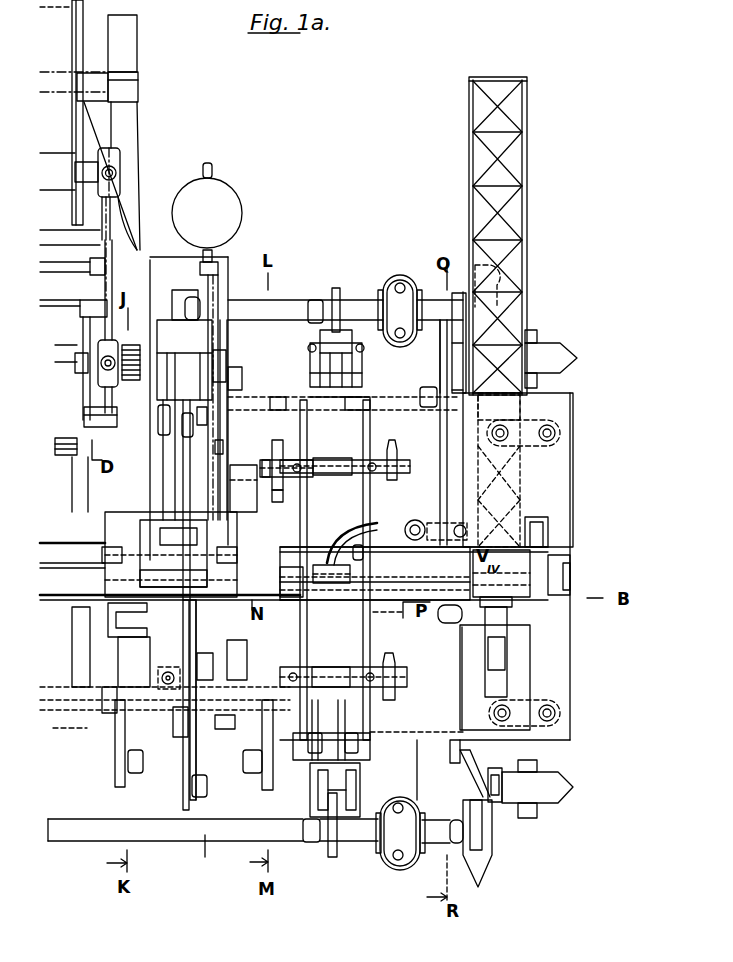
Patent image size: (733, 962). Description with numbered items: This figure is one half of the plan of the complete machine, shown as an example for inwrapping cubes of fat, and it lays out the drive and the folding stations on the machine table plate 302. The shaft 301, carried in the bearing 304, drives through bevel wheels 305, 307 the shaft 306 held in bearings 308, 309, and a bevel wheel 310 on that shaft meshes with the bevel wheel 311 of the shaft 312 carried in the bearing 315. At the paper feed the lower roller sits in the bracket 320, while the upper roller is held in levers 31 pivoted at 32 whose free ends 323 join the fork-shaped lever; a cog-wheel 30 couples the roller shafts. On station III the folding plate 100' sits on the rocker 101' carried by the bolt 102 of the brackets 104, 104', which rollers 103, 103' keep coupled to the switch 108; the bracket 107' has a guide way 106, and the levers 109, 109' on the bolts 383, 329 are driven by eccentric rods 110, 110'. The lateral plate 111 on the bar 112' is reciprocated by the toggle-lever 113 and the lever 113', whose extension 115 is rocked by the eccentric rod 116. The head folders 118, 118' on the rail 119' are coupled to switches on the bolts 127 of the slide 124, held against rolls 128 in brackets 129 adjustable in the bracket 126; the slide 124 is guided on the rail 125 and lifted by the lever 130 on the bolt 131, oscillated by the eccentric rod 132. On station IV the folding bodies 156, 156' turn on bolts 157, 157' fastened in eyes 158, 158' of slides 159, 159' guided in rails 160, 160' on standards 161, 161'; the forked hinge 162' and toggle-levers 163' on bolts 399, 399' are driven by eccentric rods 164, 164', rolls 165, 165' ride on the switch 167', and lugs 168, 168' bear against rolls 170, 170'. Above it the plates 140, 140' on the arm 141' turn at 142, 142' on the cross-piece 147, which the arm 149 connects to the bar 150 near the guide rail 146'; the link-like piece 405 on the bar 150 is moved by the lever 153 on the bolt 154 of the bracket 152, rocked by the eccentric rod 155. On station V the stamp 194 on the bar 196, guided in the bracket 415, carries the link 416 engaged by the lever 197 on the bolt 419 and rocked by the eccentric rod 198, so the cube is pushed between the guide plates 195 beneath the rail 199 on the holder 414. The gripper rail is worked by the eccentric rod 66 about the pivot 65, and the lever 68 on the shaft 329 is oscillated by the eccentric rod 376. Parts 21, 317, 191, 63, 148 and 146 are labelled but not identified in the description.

The clamp block 21 is at (140, 95).
The rod 317 is at (126, 137).
The bracket 320 is at (120, 208).
The eccentric rod 132 is at (190, 302).
The eccentric rod 110 is at (236, 397).
The bolt 131 is at (185, 360).
The free ends of levers 323 is at (100, 310).
The cog-wheel 30 is at (119, 348).
The levers 31 is at (83, 398).
The pivot 32 is at (117, 427).
The toggle-lever 113 is at (148, 418).
The bracket 104 is at (182, 587).
The roller 103 is at (229, 409).
The lever 109 is at (230, 607).
The bolt 383 is at (223, 446).
The lever 130 is at (232, 468).
The eye 158' is at (329, 477).
The slide 159' is at (285, 459).
The lug 168' is at (336, 465).
The roll 170' is at (343, 505).
The roll 165' is at (341, 403).
The eccentric rod 164' is at (321, 296).
The toggle-lever 163' is at (346, 342).
The forked hinge 162' is at (296, 336).
The bolt 399' is at (295, 354).
The bracket 126 is at (226, 338).
The standard 161' is at (268, 378).
The rail 160' is at (369, 377).
The bolt 154 is at (430, 330).
The eccentric rod 155 is at (430, 387).
The switch 167' is at (335, 570).
The bolt 157' is at (364, 572).
The lever 153 is at (423, 467).
The bearing 304 is at (397, 280).
The shaft 301 is at (240, 306).
The lateral guide plates 195 is at (469, 208).
The bevel wheel 305 is at (472, 270).
The bracket 152 is at (522, 332).
The bevel wheel 307 is at (562, 359).
The horizontal rail 199 is at (515, 478).
The holder 414 is at (512, 422).
The bearing 308 is at (556, 434).
The link-like piece 405 is at (480, 498).
The standard 161 is at (405, 661).
The shaft 306 is at (557, 510).
The block 191 is at (550, 535).
The slide 63 is at (490, 575).
The sheet metal plate 140' is at (414, 573).
The sheet metal plate 140 is at (383, 590).
The bar 148 is at (358, 556).
The lateral guide rail 146' is at (433, 561).
The arm 149 is at (345, 534).
The pivot 142' is at (380, 540).
The bar 150 is at (424, 521).
The folding body 156' is at (340, 510).
The pivot 142 is at (296, 582).
The cross-piece 147 is at (331, 581).
The arm 141' is at (354, 612).
The rail 119' is at (255, 580).
The stamp 194 is at (520, 606).
The bar 196 is at (507, 657).
The bracket 415 is at (528, 689).
The bearing 309 is at (558, 712).
The bar 146 is at (437, 624).
The eccentric rod 66 is at (450, 625).
The pivot 65 is at (470, 642).
The lug 168 is at (329, 670).
The bolt 157 is at (367, 677).
The eye 158 is at (335, 710).
The slide 159 is at (386, 715).
The folding body 156 is at (323, 630).
The roll 170 is at (334, 647).
The lever 68 is at (247, 645).
The slide 124 is at (140, 520).
The roll 128 is at (103, 555).
The rail 125 is at (172, 557).
The bracket 129 is at (85, 543).
The lateral plate 111 is at (105, 535).
The bolt 419 is at (455, 762).
The bolt 127 is at (108, 606).
The head folder 118 is at (127, 620).
The bar 112' is at (160, 617).
The head folder 118' is at (215, 607).
The guide way 106 is at (200, 650).
The folding plate 100' is at (96, 647).
The rocker 101' is at (175, 662).
The switch 108 is at (185, 660).
The bracket 107' is at (135, 662).
The lever 113' is at (216, 675).
The bolt 102 is at (104, 696).
The shaft 329 is at (87, 730).
The plate 302 is at (85, 728).
The roller 103' is at (209, 733).
The bracket 104' is at (214, 779).
The eccentric rod 110' is at (132, 751).
The lever 109' is at (165, 779).
The extension 115 is at (183, 806).
The eccentric rod 376 is at (252, 774).
The eccentric rod 116 is at (210, 797).
The rail 160 is at (316, 760).
The roll 165 is at (330, 795).
The eccentric rod 164 is at (310, 847).
The bearing 315 is at (393, 860).
The lever 197 is at (449, 825).
The eccentric rod 198 is at (447, 840).
The bolt 399 is at (469, 776).
The link 416 is at (500, 805).
The bevel wheel 310 is at (562, 795).
The bevel wheel 311 is at (492, 866).
The shaft 312 is at (217, 870).